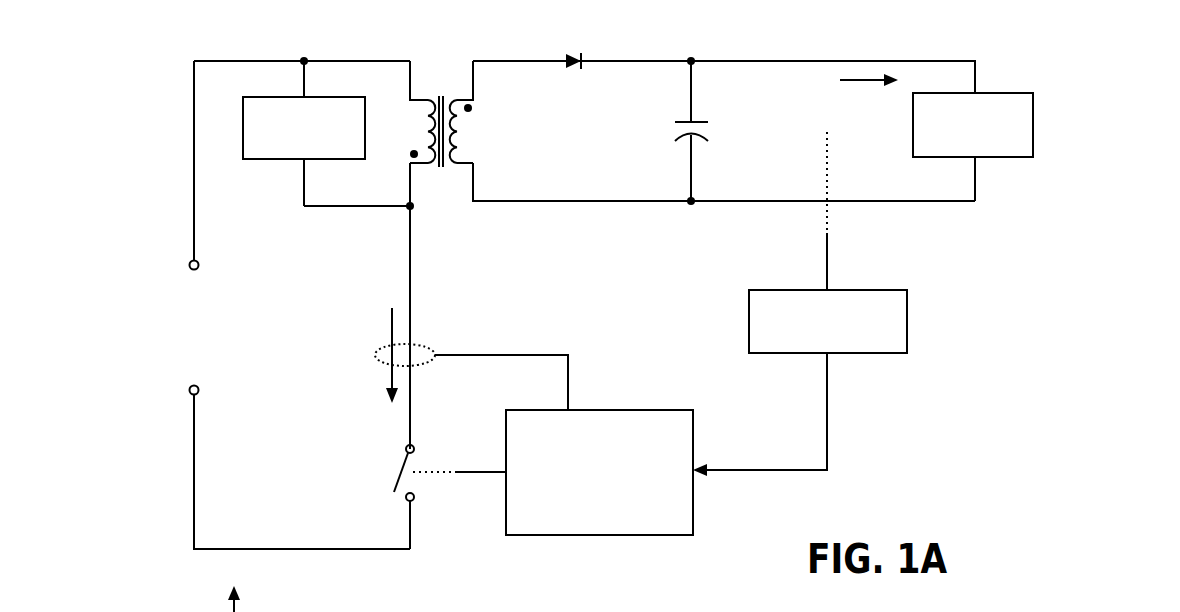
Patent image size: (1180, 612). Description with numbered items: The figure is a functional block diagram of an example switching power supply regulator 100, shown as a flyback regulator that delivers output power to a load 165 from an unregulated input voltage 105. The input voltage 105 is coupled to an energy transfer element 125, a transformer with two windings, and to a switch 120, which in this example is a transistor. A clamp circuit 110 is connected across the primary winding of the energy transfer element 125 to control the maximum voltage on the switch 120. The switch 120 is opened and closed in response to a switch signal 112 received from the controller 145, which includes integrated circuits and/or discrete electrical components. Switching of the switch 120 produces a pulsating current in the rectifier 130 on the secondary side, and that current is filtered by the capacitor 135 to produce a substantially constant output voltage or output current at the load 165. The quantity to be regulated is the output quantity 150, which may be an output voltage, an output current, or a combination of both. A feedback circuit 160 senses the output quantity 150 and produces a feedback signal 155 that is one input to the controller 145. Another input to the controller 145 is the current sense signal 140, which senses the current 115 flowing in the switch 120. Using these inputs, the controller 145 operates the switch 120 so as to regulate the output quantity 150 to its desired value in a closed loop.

The switching power supply regulator 100 is at (1110, 72).
The input voltage VIN 105 is at (178, 348).
The clamp circuit 110 is at (278, 165).
The switch signal 112 is at (488, 463).
The current ID 115 is at (378, 307).
The switch S1 120 is at (395, 455).
The energy transfer element T1 125 is at (445, 187).
The rectifier D1 130 is at (562, 72).
The capacitor C1 135 is at (682, 113).
The current sense signal 140 is at (563, 348).
The controller 145 is at (680, 400).
The output quantity UO 150 is at (818, 262).
The feedback signal UFB 155 is at (847, 420).
The feedback circuit 160 is at (913, 322).
The load 165 is at (993, 82).